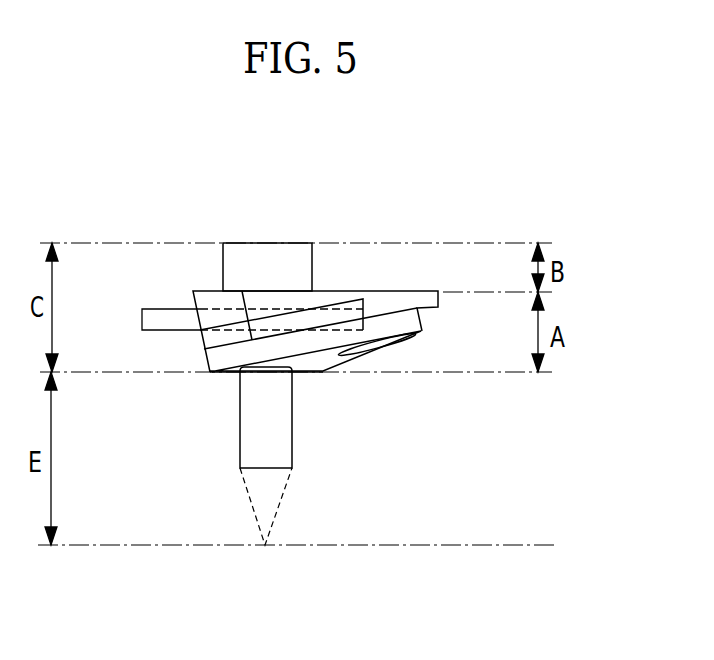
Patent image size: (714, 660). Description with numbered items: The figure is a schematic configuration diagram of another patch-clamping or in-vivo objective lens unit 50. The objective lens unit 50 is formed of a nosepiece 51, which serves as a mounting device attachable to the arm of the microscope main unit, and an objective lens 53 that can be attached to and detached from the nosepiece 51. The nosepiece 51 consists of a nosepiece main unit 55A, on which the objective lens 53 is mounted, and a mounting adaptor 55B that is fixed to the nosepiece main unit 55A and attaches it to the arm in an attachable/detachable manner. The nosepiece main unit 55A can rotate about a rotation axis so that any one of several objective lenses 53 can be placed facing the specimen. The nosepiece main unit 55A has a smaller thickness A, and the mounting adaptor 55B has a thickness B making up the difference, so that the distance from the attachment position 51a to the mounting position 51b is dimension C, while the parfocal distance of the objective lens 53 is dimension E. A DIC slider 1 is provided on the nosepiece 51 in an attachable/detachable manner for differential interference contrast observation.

The DIC slider 1 is at (148, 318).
The objective lens unit 50 is at (569, 157).
The nosepiece 51 is at (368, 273).
The attachment position 51a is at (243, 243).
The mounting position 51b is at (230, 386).
The objective lens 53 is at (292, 433).
The nosepiece main unit 55A is at (402, 322).
The mounting adaptor 55B is at (275, 268).